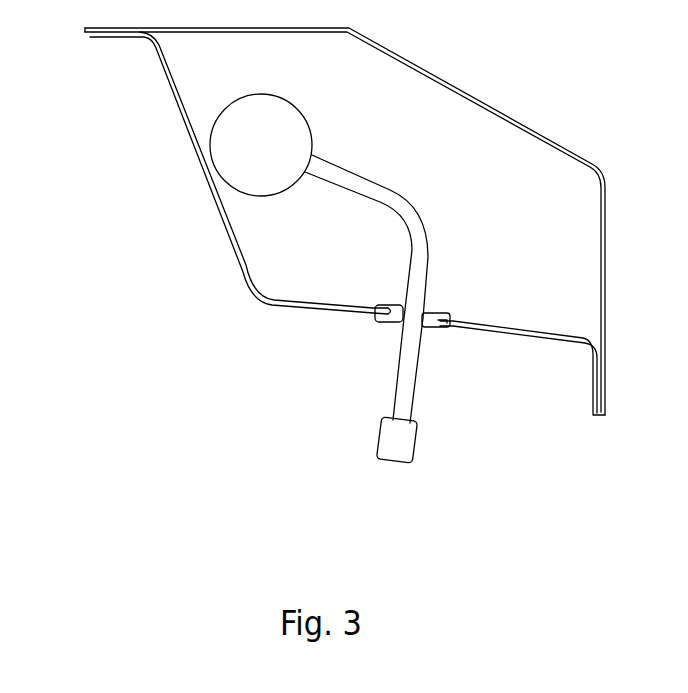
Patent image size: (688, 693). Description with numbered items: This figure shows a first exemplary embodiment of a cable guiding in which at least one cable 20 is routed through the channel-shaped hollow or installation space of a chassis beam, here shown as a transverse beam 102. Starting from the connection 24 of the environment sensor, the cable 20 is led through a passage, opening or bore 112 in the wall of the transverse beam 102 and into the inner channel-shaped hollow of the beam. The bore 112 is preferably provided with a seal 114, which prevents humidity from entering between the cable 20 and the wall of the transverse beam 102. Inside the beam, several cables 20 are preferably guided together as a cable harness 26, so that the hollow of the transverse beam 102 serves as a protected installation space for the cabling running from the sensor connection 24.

The transverse beam 102 is at (433, 78).
The cable 20 is at (262, 143).
The cable harness 26 is at (233, 142).
The connection 24 is at (397, 440).
The bore 112 is at (440, 322).
The seal 114 is at (400, 317).